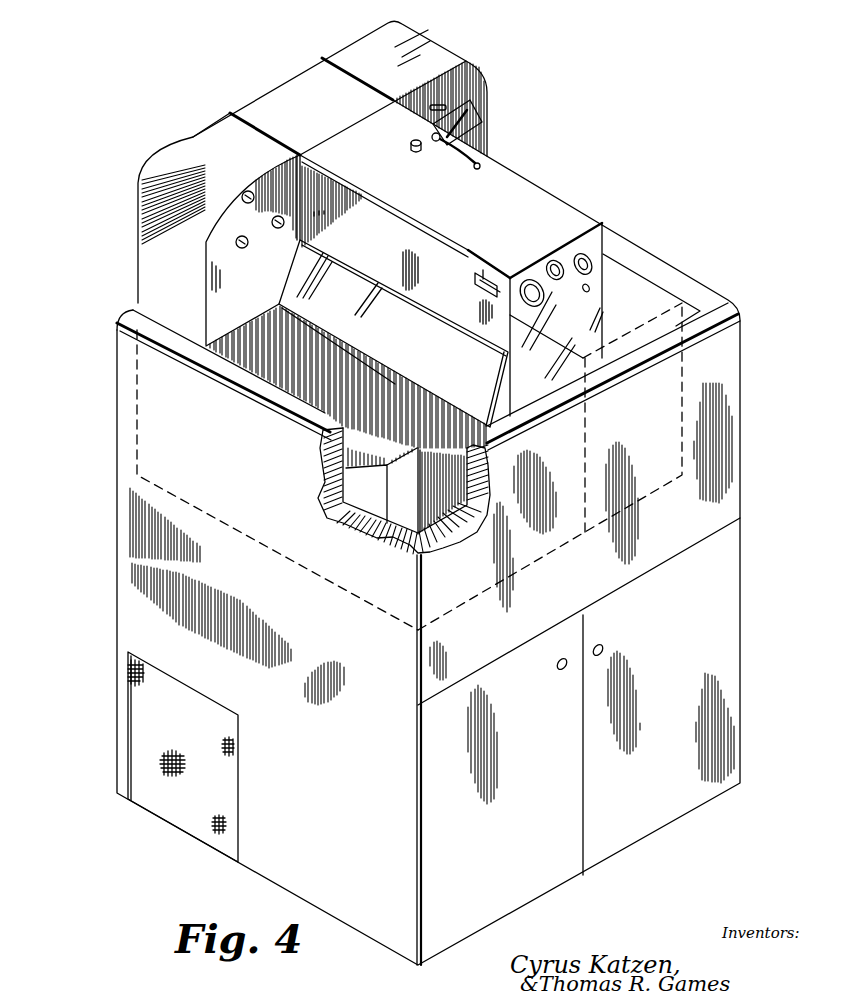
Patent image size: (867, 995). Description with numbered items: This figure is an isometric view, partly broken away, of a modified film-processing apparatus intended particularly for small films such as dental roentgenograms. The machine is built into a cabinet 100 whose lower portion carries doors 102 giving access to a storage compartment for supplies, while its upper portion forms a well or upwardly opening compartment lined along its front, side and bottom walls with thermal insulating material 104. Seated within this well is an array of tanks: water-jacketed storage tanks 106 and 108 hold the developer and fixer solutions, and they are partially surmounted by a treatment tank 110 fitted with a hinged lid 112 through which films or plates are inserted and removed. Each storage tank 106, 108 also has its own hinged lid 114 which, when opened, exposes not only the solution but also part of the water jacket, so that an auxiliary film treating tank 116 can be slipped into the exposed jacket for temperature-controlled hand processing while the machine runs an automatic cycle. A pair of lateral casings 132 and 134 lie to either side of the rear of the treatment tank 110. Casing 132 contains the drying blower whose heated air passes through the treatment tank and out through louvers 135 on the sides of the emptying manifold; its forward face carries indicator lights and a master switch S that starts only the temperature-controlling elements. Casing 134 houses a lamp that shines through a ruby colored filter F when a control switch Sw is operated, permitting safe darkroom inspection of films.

The cabinet 100 is at (108, 573).
The doors 102 is at (617, 848).
The thermal insulating material 104 is at (322, 476).
The water-jacketed storage tank 106 is at (374, 585).
The water-jacketed storage tank 108 is at (656, 490).
The treatment tank 110 is at (584, 298).
The hinged lid 112 is at (507, 193).
The hinged lid 114 is at (470, 369).
The auxiliary film treating tank 116 is at (401, 472).
The lateral casing 132 is at (178, 154).
The lateral casing 134 is at (358, 50).
The louvers 135 is at (509, 276).
The master switch S is at (243, 194).
The control switch Sw is at (508, 98).
The ruby colored filter F is at (482, 125).